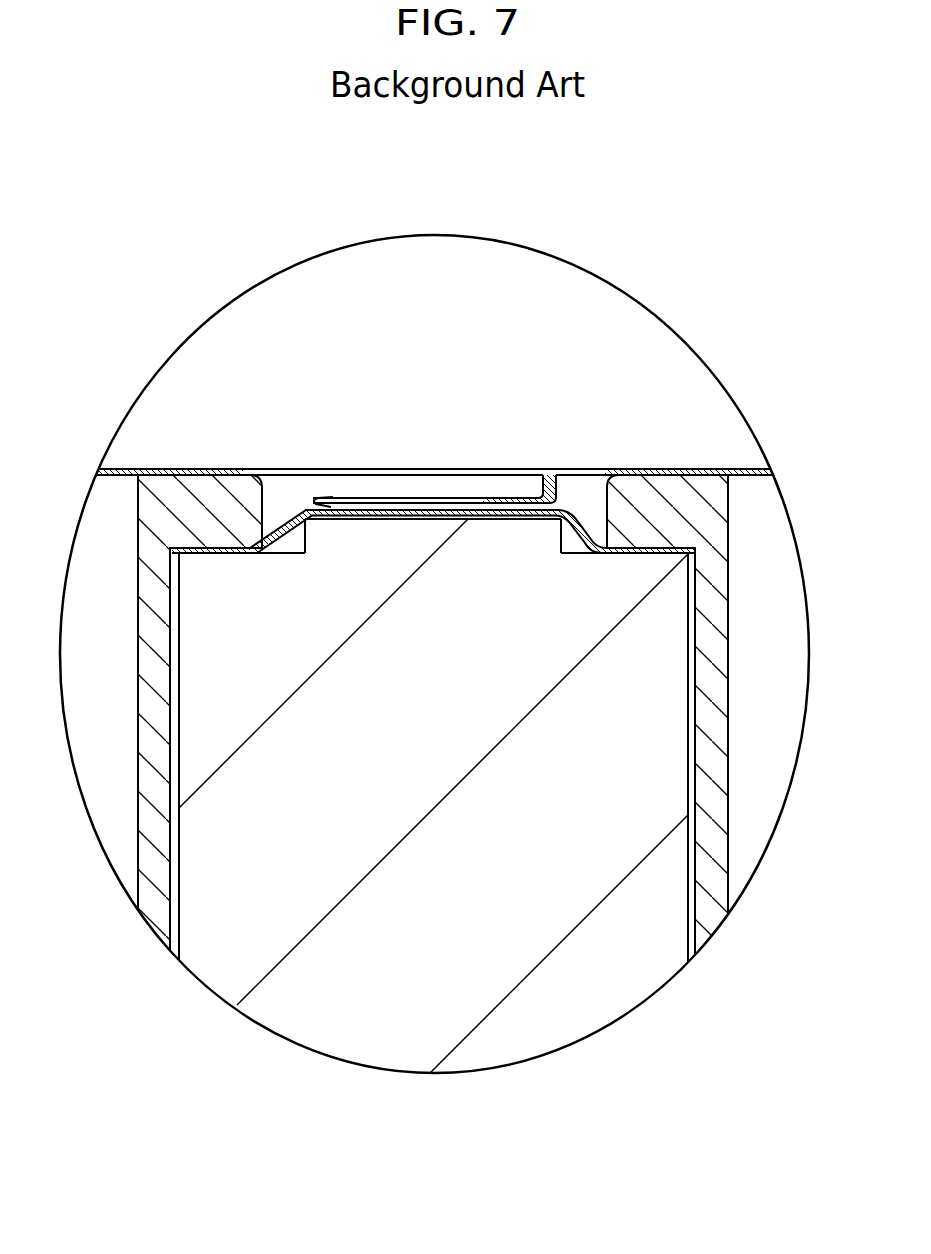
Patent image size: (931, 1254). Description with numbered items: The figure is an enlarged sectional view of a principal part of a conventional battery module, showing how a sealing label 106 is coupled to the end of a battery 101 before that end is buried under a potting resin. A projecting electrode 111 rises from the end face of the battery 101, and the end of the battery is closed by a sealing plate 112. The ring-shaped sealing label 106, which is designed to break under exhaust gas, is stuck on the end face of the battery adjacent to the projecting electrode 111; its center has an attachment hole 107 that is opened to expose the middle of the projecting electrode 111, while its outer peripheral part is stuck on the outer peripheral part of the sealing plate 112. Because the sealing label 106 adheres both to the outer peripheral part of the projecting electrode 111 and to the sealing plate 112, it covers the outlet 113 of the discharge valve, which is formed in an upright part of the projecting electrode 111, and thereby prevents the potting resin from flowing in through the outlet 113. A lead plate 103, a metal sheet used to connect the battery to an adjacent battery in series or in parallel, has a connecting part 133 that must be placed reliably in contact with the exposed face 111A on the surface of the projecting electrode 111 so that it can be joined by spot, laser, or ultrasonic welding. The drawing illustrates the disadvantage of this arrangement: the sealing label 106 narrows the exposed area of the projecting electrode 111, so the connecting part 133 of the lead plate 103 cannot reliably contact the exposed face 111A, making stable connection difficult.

The battery 101 is at (465, 720).
The lead plate 103 is at (475, 481).
The sealing label 106 is at (580, 523).
The attachment hole 107 is at (342, 497).
The projecting electrode 111 is at (427, 530).
The exposed face 111A is at (399, 498).
The sealing plate 112 is at (260, 468).
The outlet 113 is at (288, 548).
The connecting part 133 is at (410, 503).